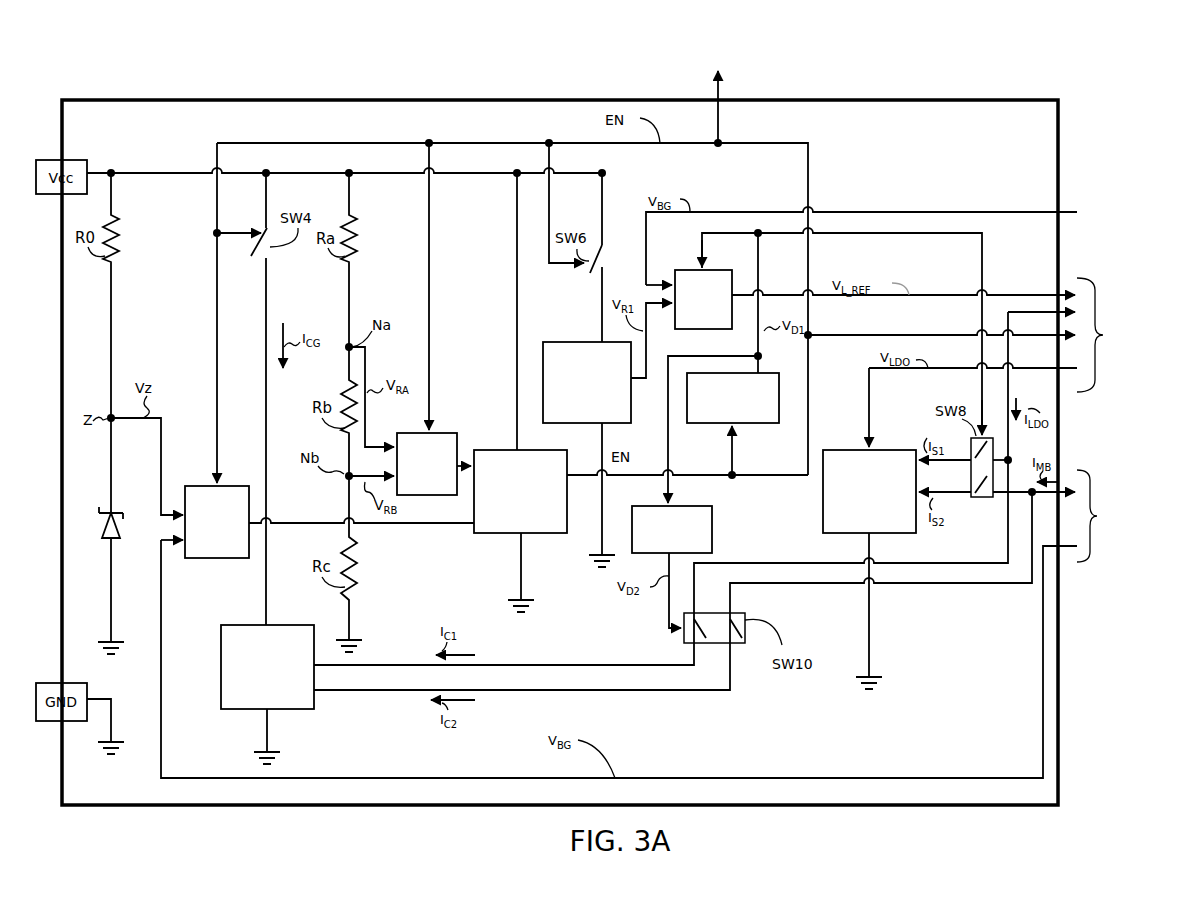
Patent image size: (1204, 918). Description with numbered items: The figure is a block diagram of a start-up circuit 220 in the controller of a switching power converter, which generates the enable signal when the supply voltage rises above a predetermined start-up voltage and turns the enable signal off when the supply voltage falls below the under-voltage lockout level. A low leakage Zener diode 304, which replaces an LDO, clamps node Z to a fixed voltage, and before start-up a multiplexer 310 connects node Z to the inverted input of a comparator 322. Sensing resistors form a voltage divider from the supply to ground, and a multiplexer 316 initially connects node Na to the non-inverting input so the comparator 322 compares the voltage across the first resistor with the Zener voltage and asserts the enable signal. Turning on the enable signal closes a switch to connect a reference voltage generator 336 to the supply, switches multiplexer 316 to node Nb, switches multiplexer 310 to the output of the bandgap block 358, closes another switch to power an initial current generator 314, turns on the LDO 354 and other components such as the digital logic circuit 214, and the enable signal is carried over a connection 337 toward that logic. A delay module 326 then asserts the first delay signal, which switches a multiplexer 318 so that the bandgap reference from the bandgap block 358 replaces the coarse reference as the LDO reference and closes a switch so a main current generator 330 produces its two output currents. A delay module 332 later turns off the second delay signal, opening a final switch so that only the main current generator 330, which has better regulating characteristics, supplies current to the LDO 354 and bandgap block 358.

The start-up circuit 220 is at (560, 452).
The Zener diode 304 is at (120, 536).
The multiplexer 310 is at (217, 522).
The initial current generator 314 is at (267, 667).
The multiplexer 316 is at (427, 464).
The multiplexer 318 is at (703, 299).
The comparator 322 is at (520, 491).
The delay module 326 is at (733, 398).
The main current generator 330 is at (869, 491).
The delay module 332 is at (672, 529).
The reference voltage generator 336 is at (587, 382).
The enable signal connection 337 is at (718, 108).
The digital logic circuit 214 is at (718, 50).
The LDO 354 is at (1115, 335).
The bandgap block 358 is at (1121, 382).